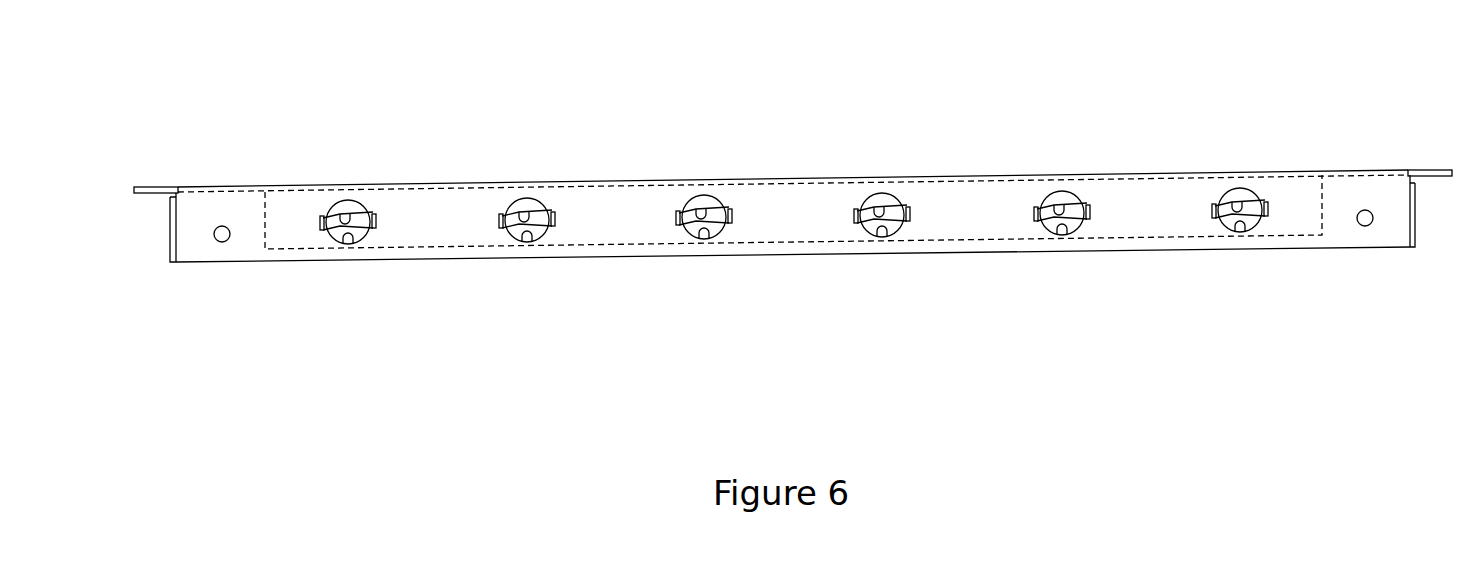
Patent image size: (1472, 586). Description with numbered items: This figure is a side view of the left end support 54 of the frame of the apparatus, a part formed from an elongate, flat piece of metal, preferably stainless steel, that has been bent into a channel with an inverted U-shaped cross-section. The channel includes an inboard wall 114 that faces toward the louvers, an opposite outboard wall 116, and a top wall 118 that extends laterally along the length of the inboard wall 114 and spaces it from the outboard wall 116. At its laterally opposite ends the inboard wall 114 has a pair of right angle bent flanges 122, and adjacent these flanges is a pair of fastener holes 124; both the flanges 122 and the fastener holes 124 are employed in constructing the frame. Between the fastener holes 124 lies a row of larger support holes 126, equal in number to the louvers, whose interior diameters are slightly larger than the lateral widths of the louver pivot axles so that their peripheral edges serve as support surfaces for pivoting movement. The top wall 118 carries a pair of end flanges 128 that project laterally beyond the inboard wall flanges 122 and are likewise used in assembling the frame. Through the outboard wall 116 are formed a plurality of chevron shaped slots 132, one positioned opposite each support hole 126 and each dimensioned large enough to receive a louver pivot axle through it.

The left end support 54 is at (804, 178).
The inboard wall 114 is at (245, 253).
The outboard wall 116 is at (445, 250).
The top wall 118 is at (628, 181).
The right angle bent flanges 122 is at (168, 240).
The fastener holes 124 is at (220, 242).
The support holes 126 is at (348, 244).
The end flanges 128 is at (155, 188).
The chevron shaped slots 132 is at (348, 200).